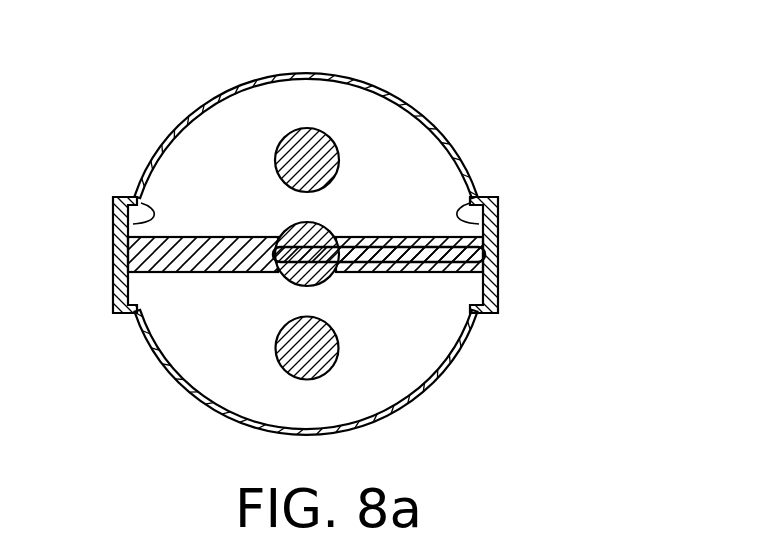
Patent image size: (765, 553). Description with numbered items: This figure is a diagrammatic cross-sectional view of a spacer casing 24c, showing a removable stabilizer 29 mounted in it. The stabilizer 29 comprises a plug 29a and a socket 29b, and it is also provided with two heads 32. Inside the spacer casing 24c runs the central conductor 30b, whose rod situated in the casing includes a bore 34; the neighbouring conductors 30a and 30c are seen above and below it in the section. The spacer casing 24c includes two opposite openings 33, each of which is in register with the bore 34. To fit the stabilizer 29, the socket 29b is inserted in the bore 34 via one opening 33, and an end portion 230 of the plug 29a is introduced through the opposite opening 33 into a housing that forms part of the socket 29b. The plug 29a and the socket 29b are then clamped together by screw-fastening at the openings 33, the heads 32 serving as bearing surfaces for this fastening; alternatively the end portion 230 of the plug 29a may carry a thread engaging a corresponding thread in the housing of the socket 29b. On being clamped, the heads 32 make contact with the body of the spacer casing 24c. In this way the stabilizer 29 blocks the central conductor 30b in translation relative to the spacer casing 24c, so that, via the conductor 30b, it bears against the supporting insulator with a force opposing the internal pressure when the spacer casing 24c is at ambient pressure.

The removable stabilizer 29 is at (287, 221).
The plug 29a is at (197, 273).
The socket 29b is at (417, 273).
The spacer casing 24c is at (276, 76).
The first tubular passage 30a is at (313, 128).
The conductor 30b is at (321, 173).
The third tubular passage 30c is at (338, 354).
The heads 32 is at (113, 242).
The openings 33 is at (137, 195).
The bore 34 is at (289, 228).
The end portion of the plug 230 is at (382, 273).